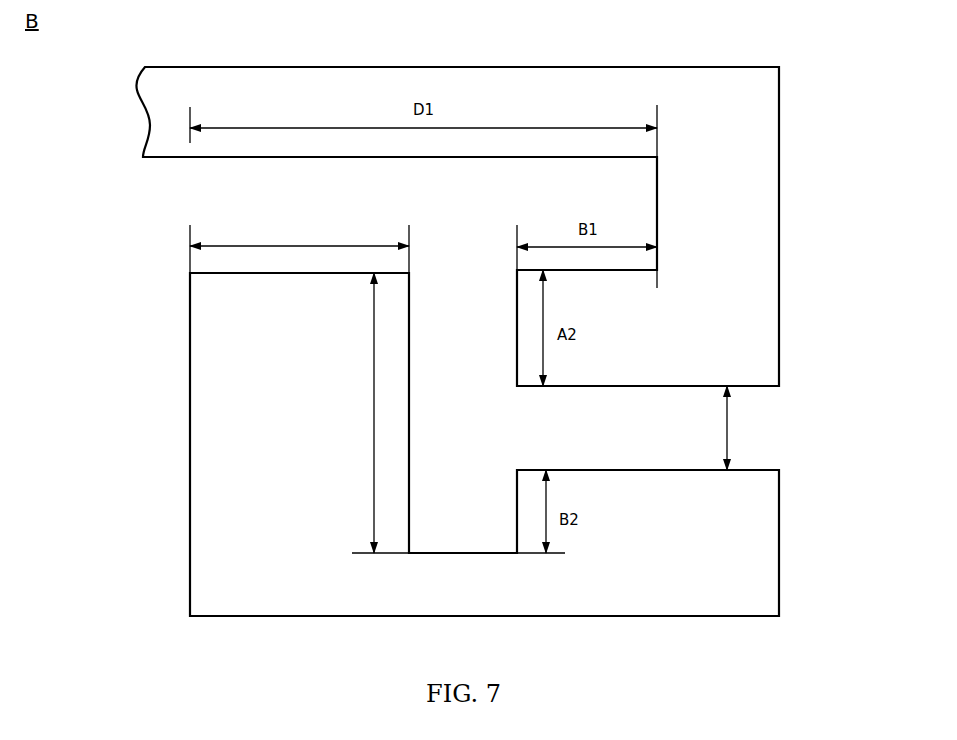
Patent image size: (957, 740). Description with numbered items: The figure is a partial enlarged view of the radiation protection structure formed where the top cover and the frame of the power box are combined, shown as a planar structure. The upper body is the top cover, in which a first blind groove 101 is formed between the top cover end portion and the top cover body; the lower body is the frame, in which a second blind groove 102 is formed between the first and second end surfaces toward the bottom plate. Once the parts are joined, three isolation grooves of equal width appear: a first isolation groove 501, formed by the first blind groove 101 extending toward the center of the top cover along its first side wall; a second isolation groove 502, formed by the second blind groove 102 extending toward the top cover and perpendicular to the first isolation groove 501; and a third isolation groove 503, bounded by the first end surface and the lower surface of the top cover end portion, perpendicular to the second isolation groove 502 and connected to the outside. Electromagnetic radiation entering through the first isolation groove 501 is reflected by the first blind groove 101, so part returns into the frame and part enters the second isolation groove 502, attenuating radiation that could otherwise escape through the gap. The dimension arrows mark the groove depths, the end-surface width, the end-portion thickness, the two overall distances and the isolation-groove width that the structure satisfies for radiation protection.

The first blind groove 101 is at (562, 213).
The second blind groove 102 is at (462, 501).
The first isolation groove 501 is at (398, 208).
The second isolation groove 502 is at (468, 372).
The third isolation groove 503 is at (580, 424).